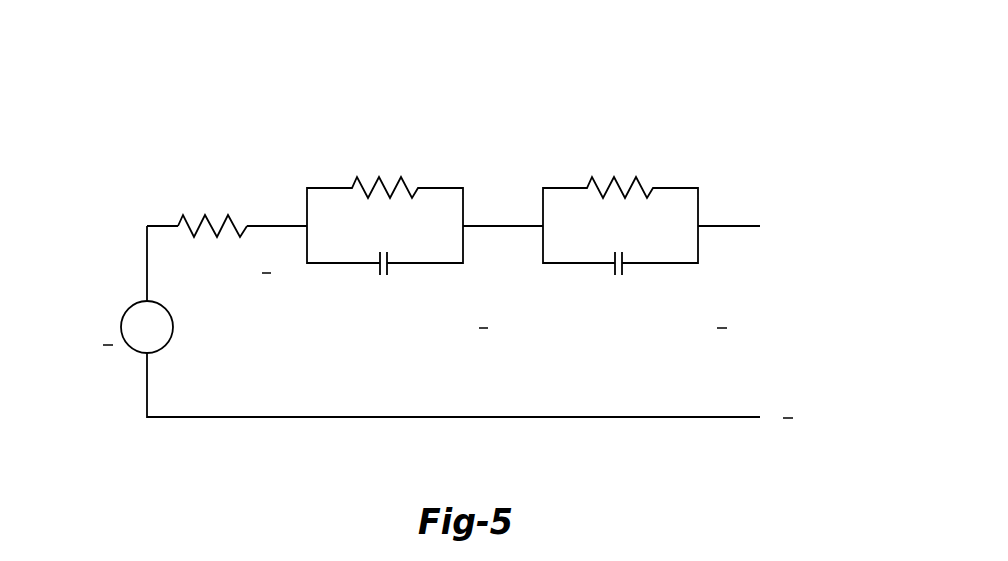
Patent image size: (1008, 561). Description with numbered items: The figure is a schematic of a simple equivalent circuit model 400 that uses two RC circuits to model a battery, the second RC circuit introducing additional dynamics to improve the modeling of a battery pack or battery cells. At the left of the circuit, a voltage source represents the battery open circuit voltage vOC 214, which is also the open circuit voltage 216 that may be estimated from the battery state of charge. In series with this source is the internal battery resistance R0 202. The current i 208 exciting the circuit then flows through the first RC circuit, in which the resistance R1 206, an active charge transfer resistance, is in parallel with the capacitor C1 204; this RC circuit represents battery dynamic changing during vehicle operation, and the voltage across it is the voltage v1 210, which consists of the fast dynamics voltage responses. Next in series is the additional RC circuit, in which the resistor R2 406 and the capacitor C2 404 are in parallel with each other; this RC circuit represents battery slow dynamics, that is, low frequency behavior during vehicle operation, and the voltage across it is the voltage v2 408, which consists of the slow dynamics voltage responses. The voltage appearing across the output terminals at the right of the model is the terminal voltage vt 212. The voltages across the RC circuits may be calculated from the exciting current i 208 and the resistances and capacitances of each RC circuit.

The equivalent circuit model 400 is at (150, 88).
The internal battery resistance R0 202 is at (217, 172).
The capacitor C1 204 is at (372, 292).
The resistance R1 206 is at (391, 131).
The current i 208 is at (497, 181).
The voltage v1 210 is at (386, 346).
The terminal voltage vt 212 is at (812, 310).
The battery open circuit voltage vOC 214 is at (72, 332).
The open circuit voltage vOC 216 is at (217, 293).
The capacitor C2 404 is at (606, 292).
The resistor R2 406 is at (625, 132).
The voltage v2 408 is at (622, 346).